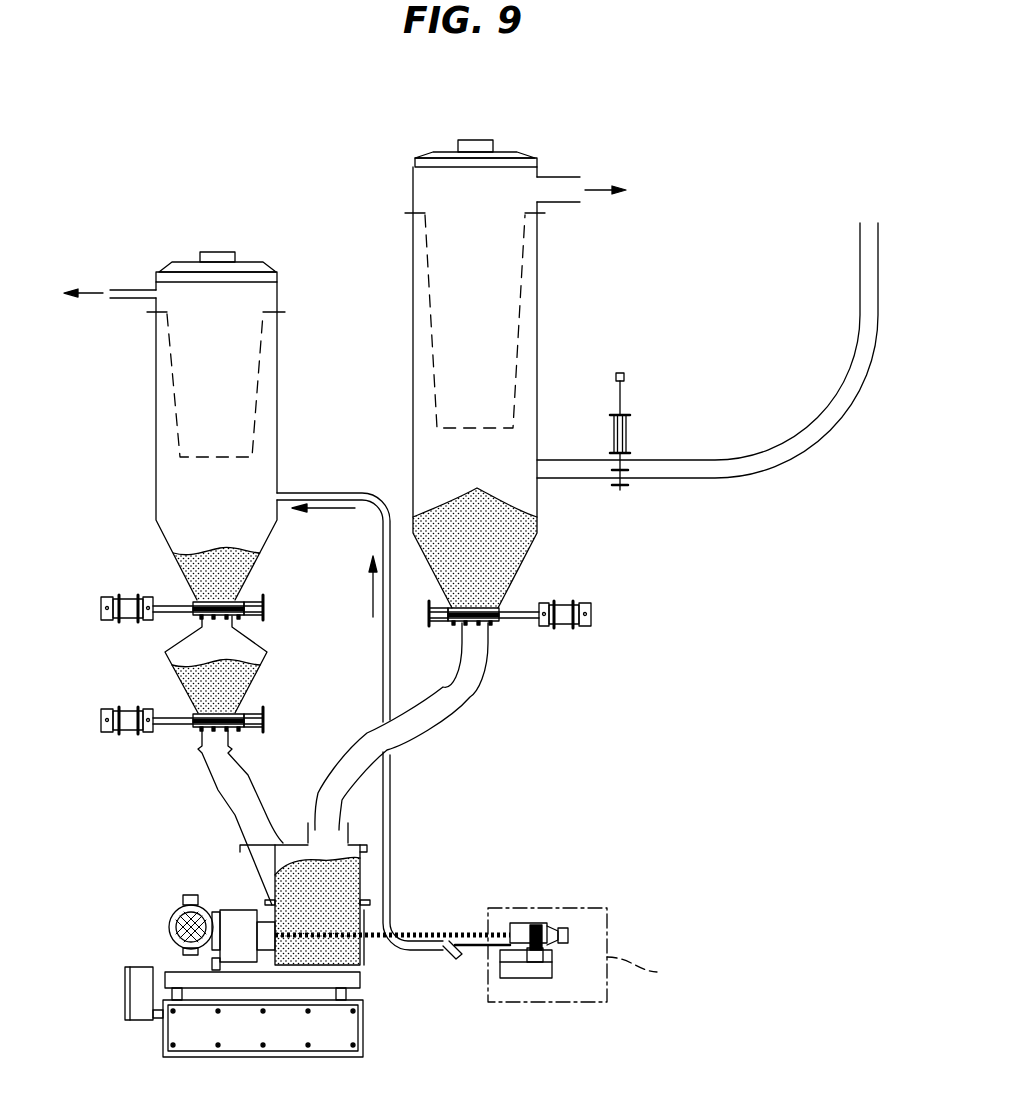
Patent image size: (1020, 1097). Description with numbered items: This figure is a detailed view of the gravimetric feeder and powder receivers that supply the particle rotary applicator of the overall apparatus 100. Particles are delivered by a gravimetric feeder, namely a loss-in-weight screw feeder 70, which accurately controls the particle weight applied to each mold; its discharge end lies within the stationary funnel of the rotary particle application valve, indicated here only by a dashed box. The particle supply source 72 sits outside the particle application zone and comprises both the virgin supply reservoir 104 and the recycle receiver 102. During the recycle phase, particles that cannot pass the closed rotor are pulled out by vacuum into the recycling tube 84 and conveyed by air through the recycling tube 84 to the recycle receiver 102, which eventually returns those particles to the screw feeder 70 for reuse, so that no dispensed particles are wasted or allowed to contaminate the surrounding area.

The pneumatic conveying system 100 is at (318, 108).
The recycle receiver 102 is at (277, 400).
The virgin supply reservoir 104 is at (537, 355).
The recycling tube 84 is at (390, 800).
The particle supply source 72 is at (353, 885).
The loss-in-weight screw feeder 70 is at (480, 932).